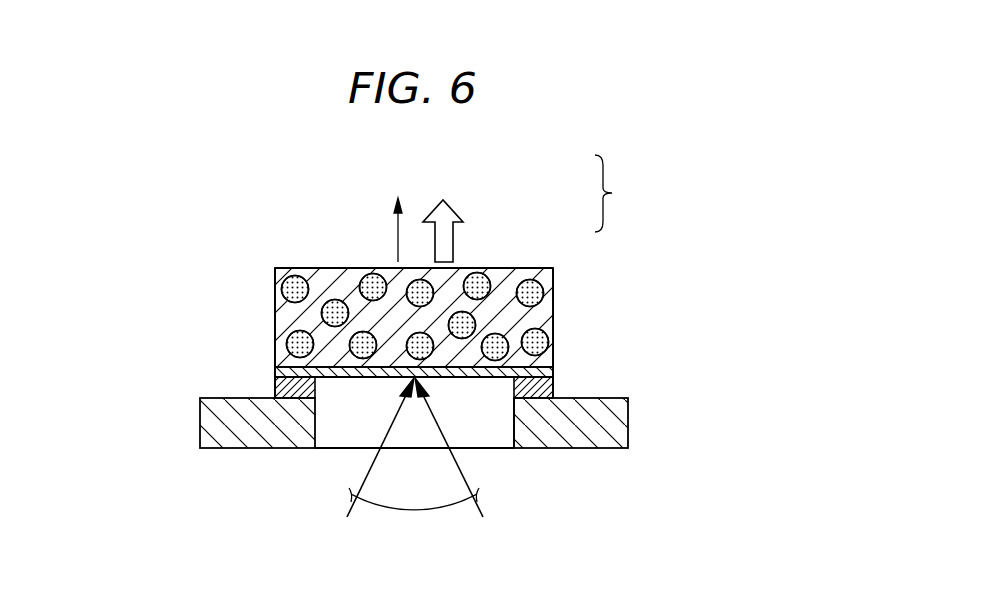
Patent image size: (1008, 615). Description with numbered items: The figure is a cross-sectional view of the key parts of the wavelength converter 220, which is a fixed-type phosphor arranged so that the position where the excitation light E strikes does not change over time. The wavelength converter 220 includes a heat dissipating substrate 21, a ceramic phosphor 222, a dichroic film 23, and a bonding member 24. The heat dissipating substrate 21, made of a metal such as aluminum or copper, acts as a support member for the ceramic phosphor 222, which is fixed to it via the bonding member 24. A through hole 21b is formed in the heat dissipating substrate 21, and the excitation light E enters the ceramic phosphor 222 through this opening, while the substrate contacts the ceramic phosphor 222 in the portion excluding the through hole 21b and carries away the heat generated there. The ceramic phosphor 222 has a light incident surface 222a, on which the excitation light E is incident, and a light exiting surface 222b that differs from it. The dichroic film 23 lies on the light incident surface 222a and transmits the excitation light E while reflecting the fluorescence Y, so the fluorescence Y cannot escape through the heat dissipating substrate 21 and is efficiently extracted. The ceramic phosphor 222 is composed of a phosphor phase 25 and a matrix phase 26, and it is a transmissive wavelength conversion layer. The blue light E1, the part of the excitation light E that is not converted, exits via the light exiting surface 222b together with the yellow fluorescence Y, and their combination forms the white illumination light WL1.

The wavelength converter 220 is at (714, 242).
The ceramic phosphor 222 is at (566, 288).
The light incident surface 222a is at (338, 373).
The light exiting surface 222b is at (320, 268).
The dichroic film 23 is at (547, 374).
The bonding member 24 is at (277, 388).
The phosphor phase 25 is at (290, 290).
The matrix phase 26 is at (277, 315).
The heat dissipating substrate 21 is at (213, 425).
The through hole 21b is at (512, 437).
The excitation light E is at (430, 512).
The blue light (transmitted light) E1 is at (400, 204).
The fluorescence Y is at (453, 212).
The white illumination light WL1 is at (627, 193).